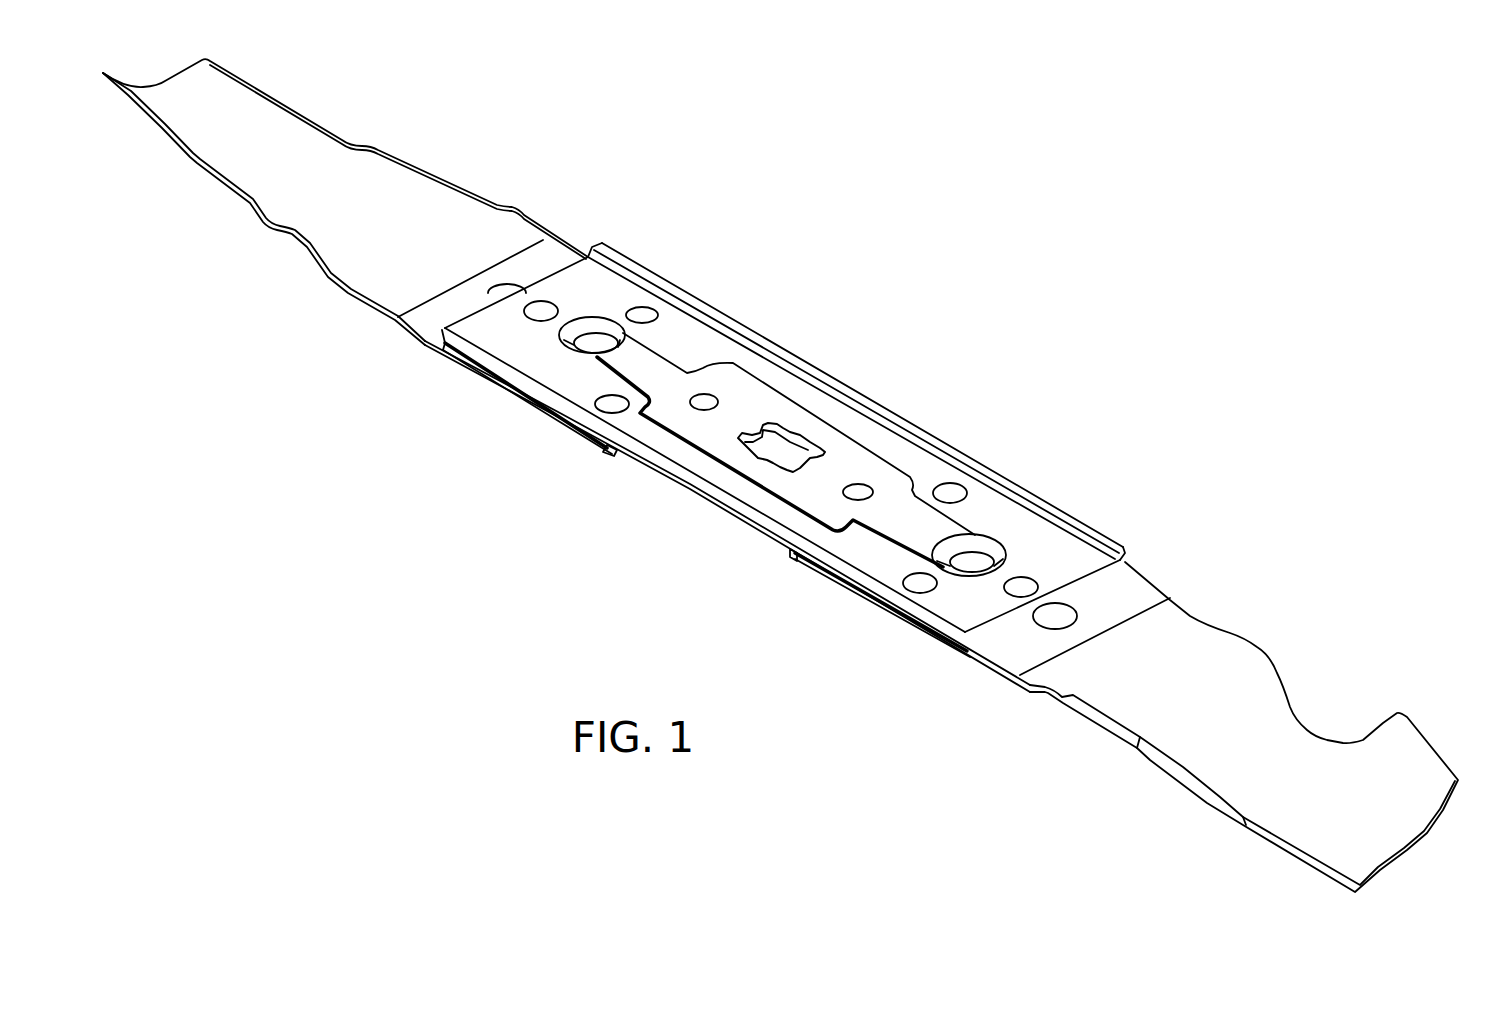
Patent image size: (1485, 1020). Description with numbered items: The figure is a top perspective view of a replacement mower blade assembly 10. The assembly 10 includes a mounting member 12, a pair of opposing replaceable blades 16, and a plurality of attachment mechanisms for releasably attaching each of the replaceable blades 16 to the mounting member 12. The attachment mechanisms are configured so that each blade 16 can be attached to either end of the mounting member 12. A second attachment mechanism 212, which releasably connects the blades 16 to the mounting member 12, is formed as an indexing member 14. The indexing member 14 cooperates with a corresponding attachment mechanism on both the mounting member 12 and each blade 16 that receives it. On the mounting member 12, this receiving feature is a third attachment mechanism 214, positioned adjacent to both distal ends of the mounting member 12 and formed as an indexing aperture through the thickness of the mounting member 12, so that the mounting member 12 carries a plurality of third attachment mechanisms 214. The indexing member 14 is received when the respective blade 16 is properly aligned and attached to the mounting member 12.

The replacement mower blade assembly 10 is at (998, 250).
The mounting member 12 is at (780, 475).
The indexing member 14 is at (783, 449).
The replaceable blades 16 is at (428, 212).
The second attachment mechanism 212 is at (707, 432).
The third attachment mechanism 214 is at (609, 330).